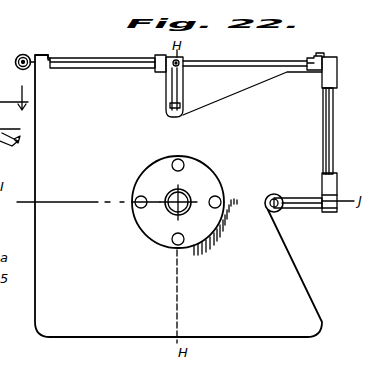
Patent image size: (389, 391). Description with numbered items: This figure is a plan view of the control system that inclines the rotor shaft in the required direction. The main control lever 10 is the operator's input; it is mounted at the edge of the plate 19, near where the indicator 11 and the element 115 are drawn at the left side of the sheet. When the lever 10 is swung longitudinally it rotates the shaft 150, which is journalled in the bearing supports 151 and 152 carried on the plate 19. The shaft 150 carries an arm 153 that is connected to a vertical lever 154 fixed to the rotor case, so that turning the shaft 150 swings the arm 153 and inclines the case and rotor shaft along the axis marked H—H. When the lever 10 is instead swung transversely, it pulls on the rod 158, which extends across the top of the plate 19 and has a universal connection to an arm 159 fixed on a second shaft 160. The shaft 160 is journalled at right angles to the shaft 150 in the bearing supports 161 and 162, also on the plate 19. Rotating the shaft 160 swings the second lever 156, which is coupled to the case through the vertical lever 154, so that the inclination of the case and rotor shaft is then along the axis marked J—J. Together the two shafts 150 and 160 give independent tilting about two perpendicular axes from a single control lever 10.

The main control lever 10 is at (23, 54).
The indicator arrow 11 is at (14, 106).
The plate 19 is at (35, 184).
The lever 115 is at (12, 146).
The shaft 150 is at (100, 58).
The bearing support 151 is at (52, 49).
The bearing support 152 is at (158, 56).
The arm 153 is at (184, 86).
The vertical lever 154 is at (184, 104).
The second lever 156 is at (311, 213).
The rod 158 is at (262, 60).
The arm 159 is at (340, 52).
The shaft 160 is at (334, 146).
The bearing support 161 is at (322, 78).
The bearing support 162 is at (332, 184).